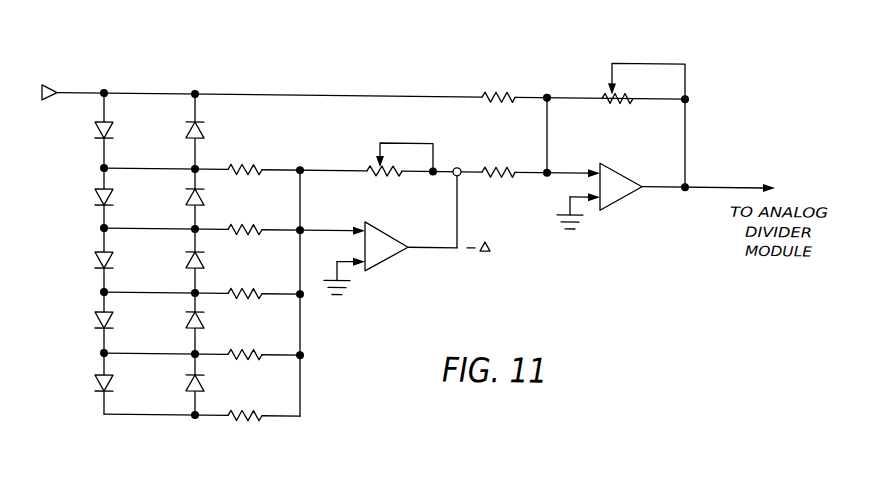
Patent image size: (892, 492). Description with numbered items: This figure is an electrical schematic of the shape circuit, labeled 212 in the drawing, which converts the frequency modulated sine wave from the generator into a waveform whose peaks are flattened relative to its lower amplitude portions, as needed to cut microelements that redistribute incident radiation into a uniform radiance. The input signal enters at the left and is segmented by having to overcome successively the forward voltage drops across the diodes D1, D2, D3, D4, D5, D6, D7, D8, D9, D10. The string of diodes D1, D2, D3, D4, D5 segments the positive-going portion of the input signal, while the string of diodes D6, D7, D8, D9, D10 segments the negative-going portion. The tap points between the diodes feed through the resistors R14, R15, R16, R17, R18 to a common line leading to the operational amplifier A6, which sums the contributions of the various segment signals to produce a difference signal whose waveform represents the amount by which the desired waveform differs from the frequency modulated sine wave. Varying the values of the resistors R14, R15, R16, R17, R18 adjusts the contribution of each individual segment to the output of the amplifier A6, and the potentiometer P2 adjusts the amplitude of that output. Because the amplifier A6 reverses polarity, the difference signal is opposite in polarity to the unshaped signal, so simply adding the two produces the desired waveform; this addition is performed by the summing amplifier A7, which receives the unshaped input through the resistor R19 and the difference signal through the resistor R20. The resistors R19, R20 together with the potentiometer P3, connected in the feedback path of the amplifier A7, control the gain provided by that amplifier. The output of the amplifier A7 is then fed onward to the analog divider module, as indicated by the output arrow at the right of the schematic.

The diode function generator circuit 212 is at (310, 53).
The diode D1 is at (85, 131).
The diode D2 is at (85, 198).
The diode D3 is at (85, 261).
The diode D4 is at (85, 321).
The diode D5 is at (85, 384).
The diode D6 is at (179, 131).
The diode D7 is at (179, 198).
The diode D8 is at (179, 261).
The diode D9 is at (179, 321).
The diode D10 is at (177, 384).
The resistor R14 is at (245, 159).
The resistor R15 is at (245, 218).
The resistor R16 is at (245, 283).
The resistor R17 is at (245, 344).
The resistor R18 is at (245, 405).
The resistor R19 is at (498, 87).
The resistor R20 is at (499, 162).
The potentiometer P2 is at (400, 160).
The potentiometer P3 is at (643, 83).
The operational amplifier A6 is at (354, 258).
The operational amplifier A7 is at (599, 196).